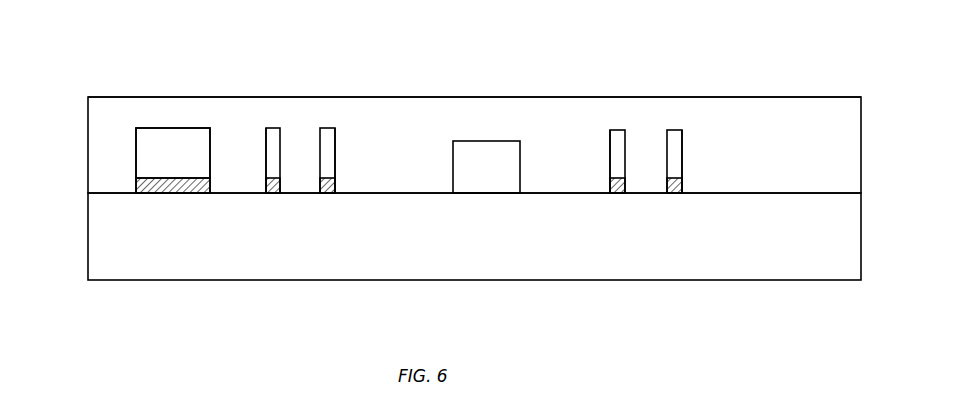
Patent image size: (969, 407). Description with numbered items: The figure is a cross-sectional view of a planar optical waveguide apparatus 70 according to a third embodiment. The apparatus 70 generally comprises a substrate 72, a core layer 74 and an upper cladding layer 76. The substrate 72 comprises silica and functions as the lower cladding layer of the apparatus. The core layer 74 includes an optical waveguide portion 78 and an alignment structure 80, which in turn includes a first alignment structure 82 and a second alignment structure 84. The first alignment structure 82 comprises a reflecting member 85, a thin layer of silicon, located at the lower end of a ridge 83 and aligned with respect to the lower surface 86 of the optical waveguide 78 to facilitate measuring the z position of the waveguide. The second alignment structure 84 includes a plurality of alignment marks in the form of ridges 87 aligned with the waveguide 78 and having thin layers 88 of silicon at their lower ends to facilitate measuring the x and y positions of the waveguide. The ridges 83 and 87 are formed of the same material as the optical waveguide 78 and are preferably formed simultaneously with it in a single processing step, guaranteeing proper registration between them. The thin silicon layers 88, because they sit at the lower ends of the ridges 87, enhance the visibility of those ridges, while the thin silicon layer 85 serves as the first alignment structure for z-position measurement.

The planar optical waveguide apparatus 70 is at (826, 53).
The substrate 72 is at (847, 218).
The core layer 74 is at (765, 152).
The upper cladding layer 76 is at (861, 106).
The optical waveguide portion 78 is at (472, 130).
The alignment structure 80 is at (250, 112).
The first alignment structure 82 is at (140, 110).
The ridge 83 is at (145, 148).
The second alignment structure 84 is at (282, 110).
The reflecting member 85 is at (140, 182).
The lower surface 86 is at (470, 194).
The ridges 87 is at (266, 148).
The thin layers of silicon 88 is at (263, 194).